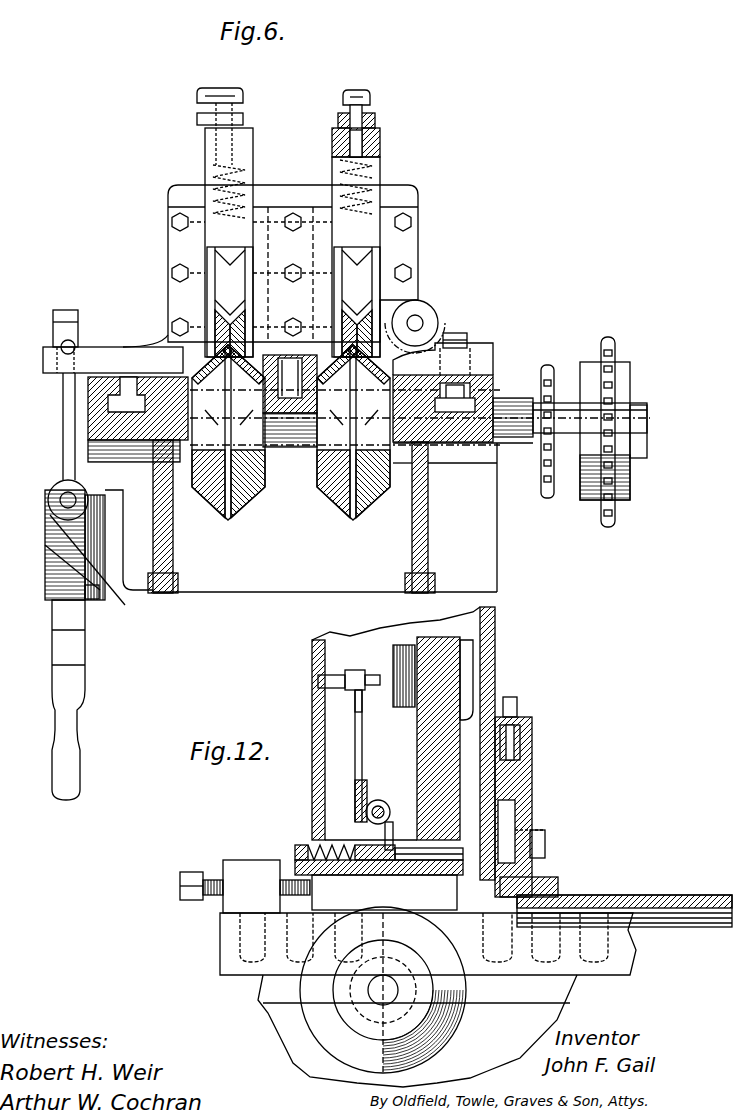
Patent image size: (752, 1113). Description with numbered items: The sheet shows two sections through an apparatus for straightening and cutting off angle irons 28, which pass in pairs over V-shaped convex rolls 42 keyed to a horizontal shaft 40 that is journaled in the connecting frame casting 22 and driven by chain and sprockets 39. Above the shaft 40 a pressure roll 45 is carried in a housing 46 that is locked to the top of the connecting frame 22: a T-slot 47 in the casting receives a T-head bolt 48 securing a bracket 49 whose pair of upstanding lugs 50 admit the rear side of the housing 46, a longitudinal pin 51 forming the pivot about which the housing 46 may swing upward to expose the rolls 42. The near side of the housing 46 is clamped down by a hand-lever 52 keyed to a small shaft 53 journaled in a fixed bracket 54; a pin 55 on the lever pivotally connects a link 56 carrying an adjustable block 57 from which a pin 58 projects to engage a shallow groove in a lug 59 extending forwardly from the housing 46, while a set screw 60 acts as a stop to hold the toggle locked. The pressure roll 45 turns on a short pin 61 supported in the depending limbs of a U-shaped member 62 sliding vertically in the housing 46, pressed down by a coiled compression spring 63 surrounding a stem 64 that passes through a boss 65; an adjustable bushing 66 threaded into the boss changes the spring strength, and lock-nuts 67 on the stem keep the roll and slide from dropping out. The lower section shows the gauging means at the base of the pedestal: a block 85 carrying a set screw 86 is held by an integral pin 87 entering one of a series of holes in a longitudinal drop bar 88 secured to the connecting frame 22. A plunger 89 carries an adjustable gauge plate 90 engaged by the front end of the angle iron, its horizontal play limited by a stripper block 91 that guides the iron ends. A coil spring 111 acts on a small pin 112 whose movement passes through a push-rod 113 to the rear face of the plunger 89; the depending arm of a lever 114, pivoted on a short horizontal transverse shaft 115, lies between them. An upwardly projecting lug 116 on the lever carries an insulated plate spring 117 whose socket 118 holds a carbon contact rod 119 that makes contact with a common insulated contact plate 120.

In FIG. 6, the connecting frame casting 22 is at (428, 530).
In FIG. 6, the angle irons 28 is at (262, 348).
In FIG. 12, the angle irons 28 is at (658, 898).
In FIG. 6, the sprockets 39 is at (618, 360).
In FIG. 6, the horizontal shaft 40 is at (563, 458).
In FIG. 6, the V-shaped convex rolls 42 is at (248, 498).
In FIG. 12, the V-shaped convex rolls 42 is at (425, 1058).
In FIG. 6, the pressure rolls 45 is at (368, 262).
In FIG. 6, the housing 46 is at (181, 190).
In FIG. 6, the T-slot 47 is at (492, 386).
In FIG. 6, the T-head bolt 48 is at (456, 334).
In FIG. 6, the bracket 49 is at (476, 358).
In FIG. 6, the upstanding lugs 50 is at (440, 342).
In FIG. 6, the longitudinal pin 51 is at (418, 320).
In FIG. 6, the hand-lever 52 is at (80, 659).
In FIG. 6, the small shaft 53 is at (60, 495).
In FIG. 6, the fixed bracket 54 is at (95, 557).
In FIG. 6, the pin 55 is at (80, 530).
In FIG. 6, the link 56 is at (63, 403).
In FIG. 6, the adjustable block 57 is at (75, 346).
In FIG. 6, the pin 58 is at (58, 345).
In FIG. 6, the lug 59 is at (128, 348).
In FIG. 6, the set screw 60 is at (92, 600).
In FIG. 6, the short pin 61 is at (365, 290).
In FIG. 6, the U-shaped member 62 is at (388, 232).
In FIG. 6, the coiled compression spring 63 is at (364, 178).
In FIG. 6, the stem 64 is at (362, 198).
In FIG. 6, the boss 65 is at (378, 140).
In FIG. 6, the adjustable bushing 66 is at (338, 120).
In FIG. 6, the lock-nuts 67 is at (358, 98).
In FIG. 12, the block 85 is at (255, 872).
In FIG. 12, the set screw 86 is at (207, 876).
In FIG. 6, the integral pin 87 is at (300, 390).
In FIG. 12, the integral pin 87 is at (240, 932).
In FIG. 6, the longitudinal drop bar 88 is at (262, 350).
In FIG. 12, the longitudinal drop bar 88 is at (232, 976).
In FIG. 12, the plungers 89 is at (490, 688).
In FIG. 12, the gauge plate 90 is at (505, 818).
In FIG. 12, the stripper block 91 is at (542, 882).
In FIG. 12, the coil spring 111 is at (336, 843).
In FIG. 12, the small pin 112 is at (360, 876).
In FIG. 12, the push-rod 113 is at (424, 862).
In FIG. 12, the lever 114 is at (390, 838).
In FIG. 12, the short horizontal transverse shaft 115 is at (382, 808).
In FIG. 12, the upwardly projecting lug 116 is at (372, 795).
In FIG. 12, the plate spring 117 is at (356, 778).
In FIG. 12, the socket 118 is at (367, 676).
In FIG. 12, the contact rod 119 is at (330, 676).
In FIG. 12, the contact plate 120 is at (392, 703).